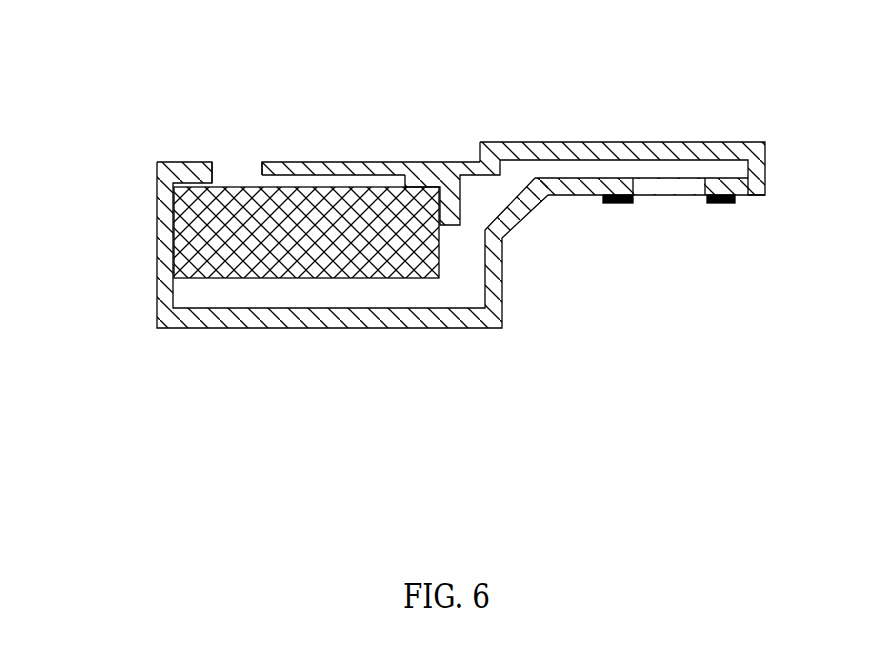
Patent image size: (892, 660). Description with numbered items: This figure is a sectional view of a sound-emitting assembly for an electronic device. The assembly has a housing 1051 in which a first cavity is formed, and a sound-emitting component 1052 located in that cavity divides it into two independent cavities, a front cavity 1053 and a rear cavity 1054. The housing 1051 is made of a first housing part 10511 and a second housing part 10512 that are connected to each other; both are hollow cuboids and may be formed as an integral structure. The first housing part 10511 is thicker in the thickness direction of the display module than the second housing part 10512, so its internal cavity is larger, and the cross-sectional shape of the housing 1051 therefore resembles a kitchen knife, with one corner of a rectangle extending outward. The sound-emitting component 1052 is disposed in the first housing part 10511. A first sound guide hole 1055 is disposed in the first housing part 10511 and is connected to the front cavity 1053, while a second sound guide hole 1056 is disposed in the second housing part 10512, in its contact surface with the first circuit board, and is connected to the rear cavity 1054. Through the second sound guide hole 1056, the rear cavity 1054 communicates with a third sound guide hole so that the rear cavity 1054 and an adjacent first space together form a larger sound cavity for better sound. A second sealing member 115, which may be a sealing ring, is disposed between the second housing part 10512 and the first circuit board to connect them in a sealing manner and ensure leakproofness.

The housing 1051 is at (526, 127).
The first housing part 10511 is at (427, 162).
The second housing part 10512 is at (580, 73).
The sound-emitting component 1052 is at (175, 223).
The front cavity 1053 is at (282, 163).
The rear cavity 1054 is at (458, 285).
The first sound guide hole 1055 is at (232, 168).
The second sound guide hole 1056 is at (675, 198).
The second sealing member 115 is at (723, 203).